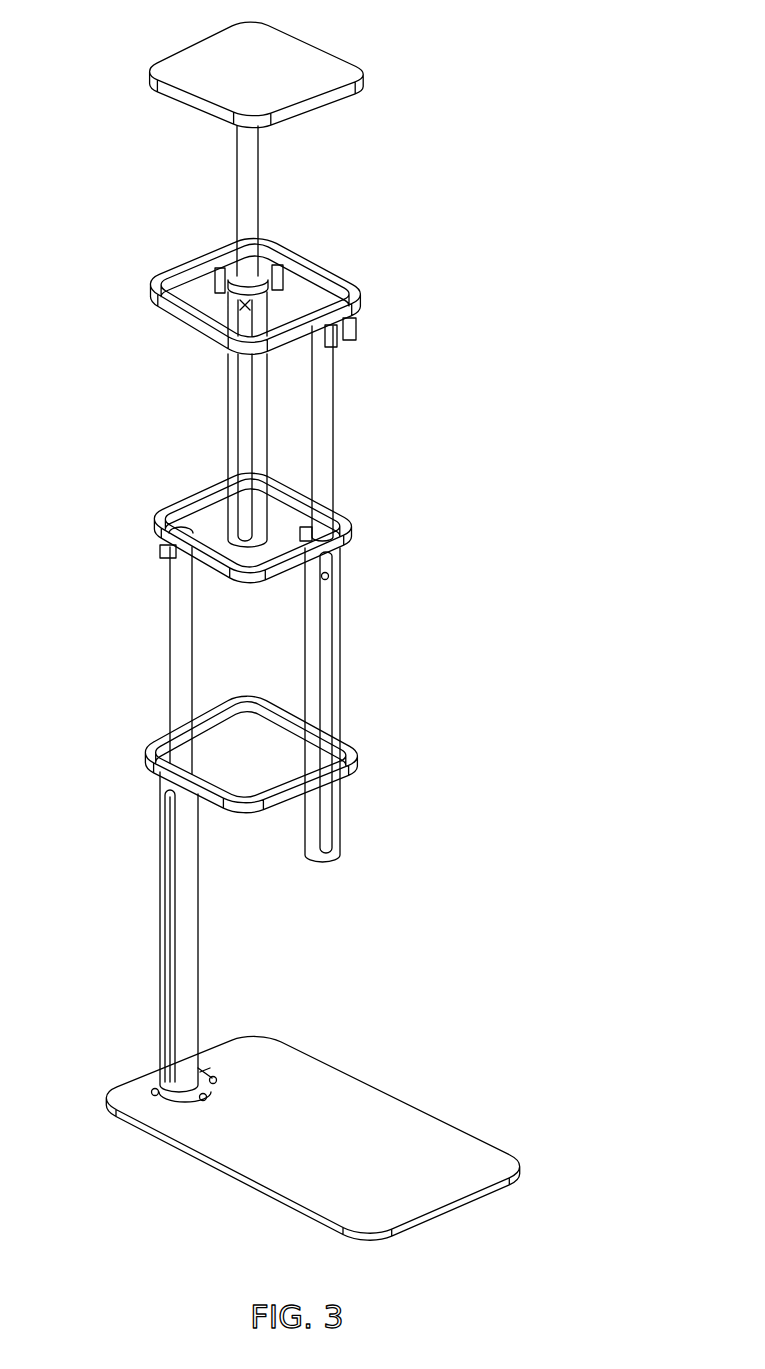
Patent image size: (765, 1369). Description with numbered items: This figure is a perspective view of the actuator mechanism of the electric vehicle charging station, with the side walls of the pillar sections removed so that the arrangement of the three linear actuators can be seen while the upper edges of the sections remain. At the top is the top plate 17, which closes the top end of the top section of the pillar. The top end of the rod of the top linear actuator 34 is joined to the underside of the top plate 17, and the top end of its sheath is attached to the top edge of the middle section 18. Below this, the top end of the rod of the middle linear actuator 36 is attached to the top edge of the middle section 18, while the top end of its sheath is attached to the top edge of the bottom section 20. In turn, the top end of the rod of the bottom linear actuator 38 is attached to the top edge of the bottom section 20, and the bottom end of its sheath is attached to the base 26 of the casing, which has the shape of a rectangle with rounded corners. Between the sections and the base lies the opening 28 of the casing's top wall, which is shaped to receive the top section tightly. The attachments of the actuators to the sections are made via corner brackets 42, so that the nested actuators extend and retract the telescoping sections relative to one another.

The top plate 17 is at (310, 62).
The top linear actuator 34 is at (251, 191).
The corner brackets 42 is at (277, 270).
The middle section 18 is at (357, 305).
The middle linear actuator 36 is at (325, 445).
The bottom section 20 is at (152, 518).
The bottom linear actuator 38 is at (178, 618).
The opening 28 is at (230, 765).
The base 26 is at (377, 1107).